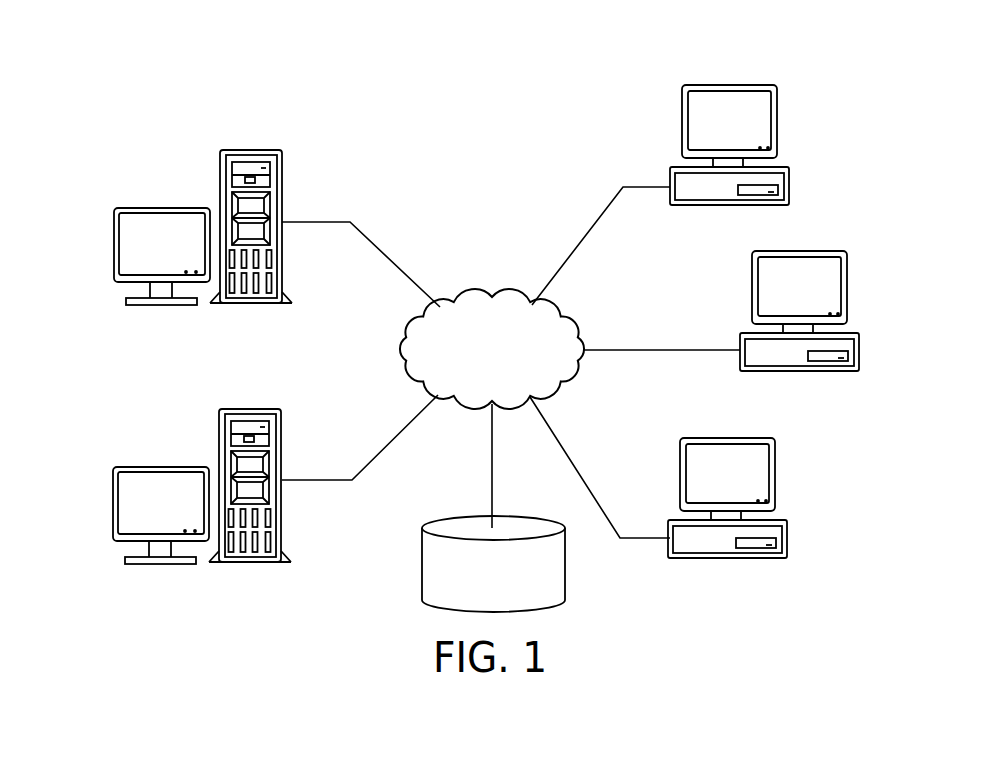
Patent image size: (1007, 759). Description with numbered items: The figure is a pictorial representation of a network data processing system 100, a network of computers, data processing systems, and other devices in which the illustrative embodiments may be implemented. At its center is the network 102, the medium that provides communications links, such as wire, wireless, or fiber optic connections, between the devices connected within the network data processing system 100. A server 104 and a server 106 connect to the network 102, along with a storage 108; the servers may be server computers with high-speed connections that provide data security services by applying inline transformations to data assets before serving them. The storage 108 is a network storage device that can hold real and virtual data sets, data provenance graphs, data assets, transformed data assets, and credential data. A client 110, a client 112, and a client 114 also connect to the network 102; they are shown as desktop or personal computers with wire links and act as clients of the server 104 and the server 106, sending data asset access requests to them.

The network data processing system 100 is at (352, 127).
The network 102 is at (468, 302).
The server 104 is at (114, 243).
The server 106 is at (113, 505).
The storage 108 is at (422, 565).
The client 110 is at (789, 178).
The client 112 is at (860, 360).
The client 114 is at (790, 548).